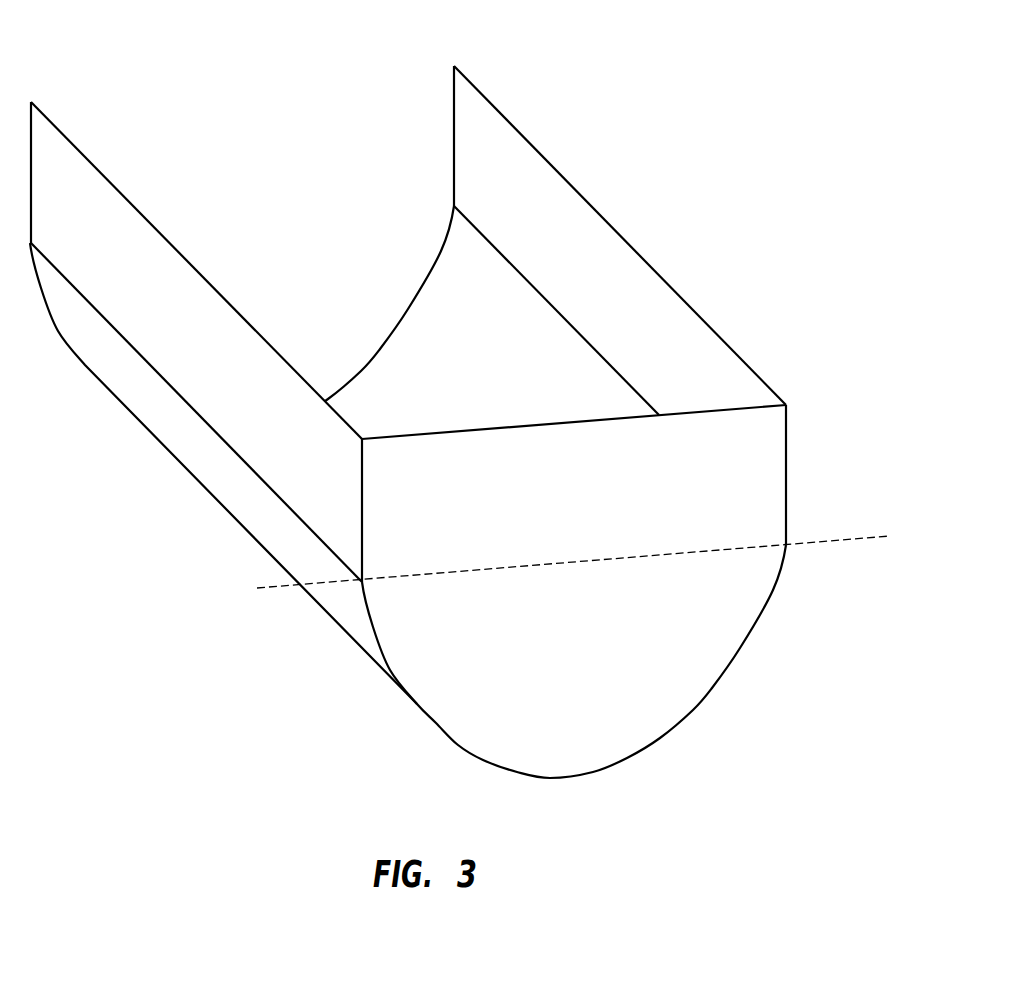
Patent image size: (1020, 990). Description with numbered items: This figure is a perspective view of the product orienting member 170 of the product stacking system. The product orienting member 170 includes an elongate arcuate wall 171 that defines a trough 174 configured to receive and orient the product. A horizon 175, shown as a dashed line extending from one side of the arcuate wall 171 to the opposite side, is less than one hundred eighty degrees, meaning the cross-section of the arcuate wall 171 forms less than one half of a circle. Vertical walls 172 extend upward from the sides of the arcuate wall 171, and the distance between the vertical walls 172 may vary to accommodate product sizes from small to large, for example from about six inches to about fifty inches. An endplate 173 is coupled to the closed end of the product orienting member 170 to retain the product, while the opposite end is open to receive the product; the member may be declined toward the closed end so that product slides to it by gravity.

The product orienting member 170 is at (461, 401).
The elongate arcuate wall 171 is at (458, 744).
The vertical walls 172 is at (630, 285).
The endplate 173 is at (712, 627).
The trough 174 is at (482, 293).
The horizon 175 is at (845, 543).